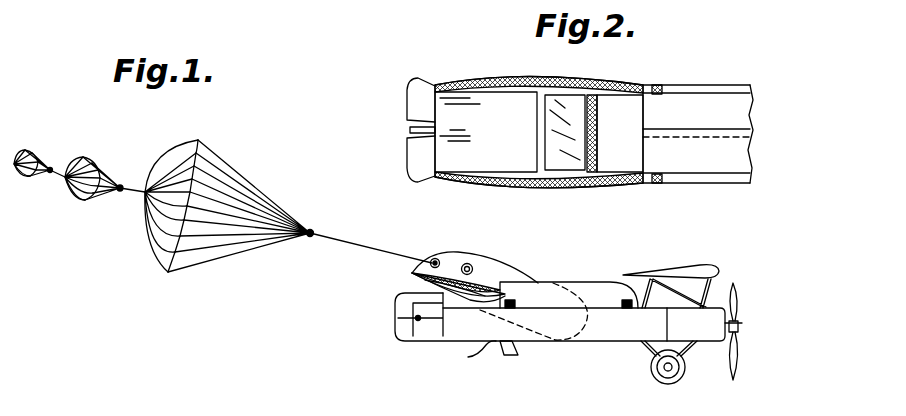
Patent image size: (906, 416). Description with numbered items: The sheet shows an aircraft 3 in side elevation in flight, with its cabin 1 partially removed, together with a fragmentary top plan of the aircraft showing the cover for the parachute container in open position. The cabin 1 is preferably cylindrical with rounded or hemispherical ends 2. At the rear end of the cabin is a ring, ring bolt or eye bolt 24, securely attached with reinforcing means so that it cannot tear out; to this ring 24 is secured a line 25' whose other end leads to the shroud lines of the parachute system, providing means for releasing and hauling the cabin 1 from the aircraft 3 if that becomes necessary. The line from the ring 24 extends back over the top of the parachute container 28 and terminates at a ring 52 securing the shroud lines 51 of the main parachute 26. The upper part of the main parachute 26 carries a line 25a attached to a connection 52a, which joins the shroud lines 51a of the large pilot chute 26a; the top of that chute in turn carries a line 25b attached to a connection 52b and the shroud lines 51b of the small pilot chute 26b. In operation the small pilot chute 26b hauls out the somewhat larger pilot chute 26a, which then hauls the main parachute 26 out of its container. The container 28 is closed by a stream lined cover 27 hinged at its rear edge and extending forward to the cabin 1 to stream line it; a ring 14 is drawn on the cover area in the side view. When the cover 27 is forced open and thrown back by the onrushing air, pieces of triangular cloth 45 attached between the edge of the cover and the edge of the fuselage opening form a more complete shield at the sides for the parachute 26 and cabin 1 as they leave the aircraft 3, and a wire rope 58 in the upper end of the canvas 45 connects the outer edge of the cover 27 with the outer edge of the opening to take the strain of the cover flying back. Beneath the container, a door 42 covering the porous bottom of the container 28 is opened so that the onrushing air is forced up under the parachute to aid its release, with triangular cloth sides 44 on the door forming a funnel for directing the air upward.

In FIG. 1, the cabin 1 is at (543, 282).
In FIG. 1, the rounded ends 2 is at (463, 253).
In FIG. 1, the aircraft 3 is at (620, 347).
In FIG. 2, the aircraft 3 is at (727, 184).
In FIG. 1, the ring 14 is at (470, 265).
In FIG. 1, the ring 24 is at (435, 258).
In FIG. 1, the tow line 25' is at (371, 253).
In FIG. 1, the line 25a is at (145, 190).
In FIG. 1, the line 25b is at (60, 172).
In FIG. 1, the main parachute 26 is at (155, 238).
In FIG. 1, the large pilot chute 26a is at (72, 192).
In FIG. 1, the small pilot chute 26b is at (22, 152).
In FIG. 1, the stream lined cover 27 is at (412, 274).
In FIG. 2, the stream lined cover 27 is at (486, 132).
In FIG. 2, the parachute container 28 is at (575, 137).
In FIG. 1, the door 42 is at (497, 353).
In FIG. 1, the triangular cloth sides 44 is at (517, 344).
In FIG. 1, the triangular cloth 45 is at (415, 273).
In FIG. 2, the triangular cloth 45 is at (541, 79).
In FIG. 1, the shroud lines 51 is at (232, 186).
In FIG. 1, the shroud lines 51a is at (100, 190).
In FIG. 1, the shroud lines 51b is at (34, 175).
In FIG. 1, the ring 52 is at (310, 229).
In FIG. 1, the connection 52a is at (121, 185).
In FIG. 1, the connection 52b is at (50, 167).
In FIG. 1, the wire rope 58 is at (477, 292).
In FIG. 2, the wire rope 58 is at (470, 79).